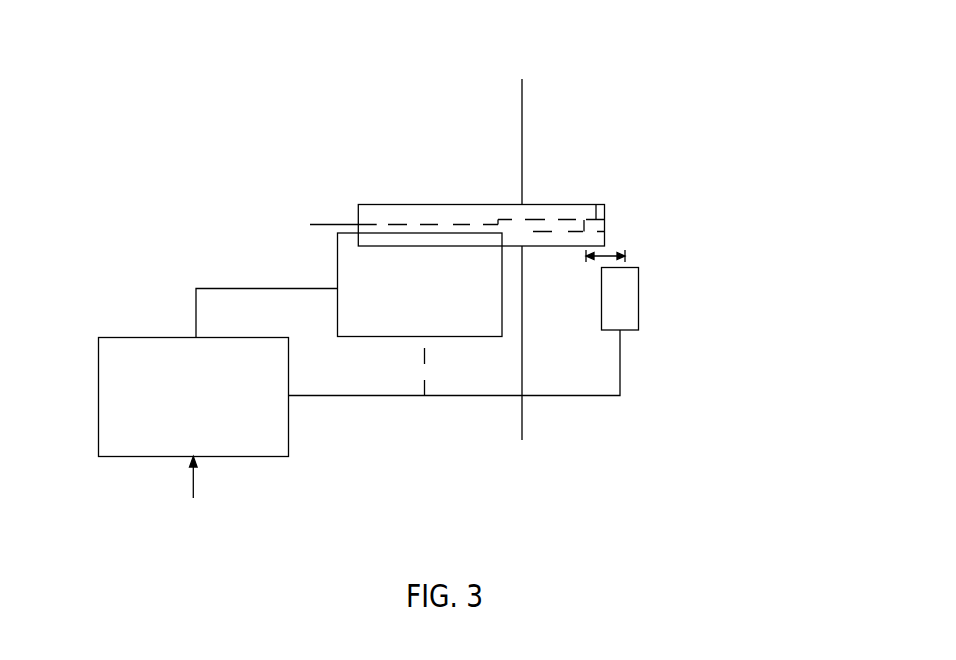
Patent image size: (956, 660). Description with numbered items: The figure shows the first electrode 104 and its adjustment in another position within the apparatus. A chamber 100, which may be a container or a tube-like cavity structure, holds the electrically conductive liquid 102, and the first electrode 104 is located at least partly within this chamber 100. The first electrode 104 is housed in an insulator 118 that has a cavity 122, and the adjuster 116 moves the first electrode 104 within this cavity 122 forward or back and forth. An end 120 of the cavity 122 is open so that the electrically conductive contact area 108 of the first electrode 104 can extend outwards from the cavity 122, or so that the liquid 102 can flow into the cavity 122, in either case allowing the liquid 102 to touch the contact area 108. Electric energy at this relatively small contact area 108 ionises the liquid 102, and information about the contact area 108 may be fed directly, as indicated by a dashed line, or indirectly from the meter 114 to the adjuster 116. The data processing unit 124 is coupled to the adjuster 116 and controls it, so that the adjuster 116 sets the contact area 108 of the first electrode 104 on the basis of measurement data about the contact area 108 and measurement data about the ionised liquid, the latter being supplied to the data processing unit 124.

The chamber 100 is at (522, 93).
The electrically conductive liquid 102 is at (773, 264).
The first electrode 104 is at (538, 220).
The electrically conductive contact area 108 is at (605, 228).
The meter 114 is at (602, 293).
The adjuster 116 is at (337, 313).
The insulator 118 is at (382, 204).
The open end 120 is at (605, 220).
The cavity 122 is at (596, 204).
The data processing unit 124 is at (118, 337).